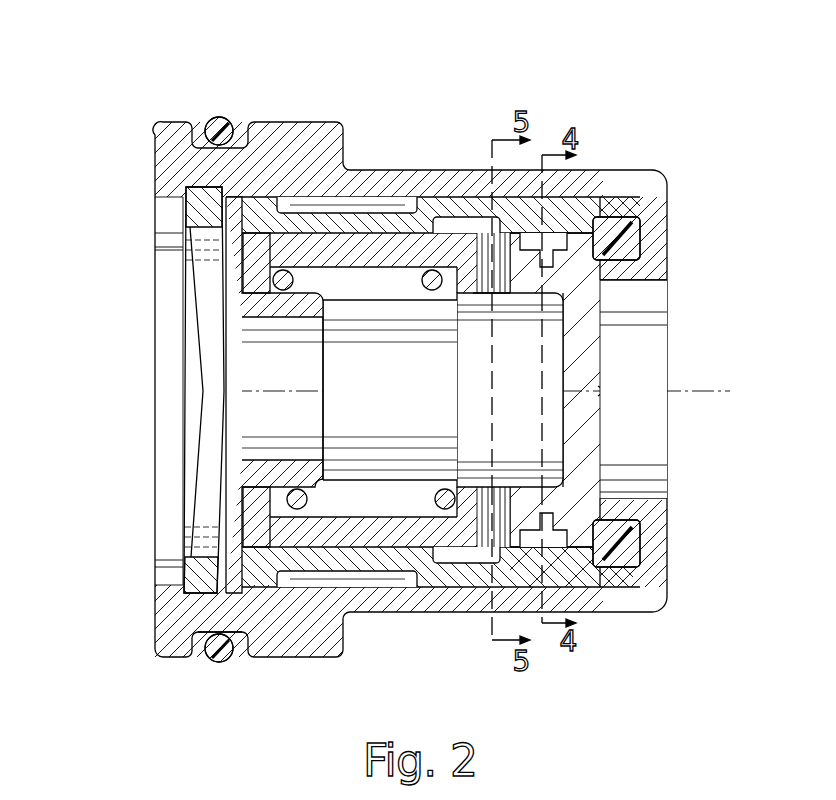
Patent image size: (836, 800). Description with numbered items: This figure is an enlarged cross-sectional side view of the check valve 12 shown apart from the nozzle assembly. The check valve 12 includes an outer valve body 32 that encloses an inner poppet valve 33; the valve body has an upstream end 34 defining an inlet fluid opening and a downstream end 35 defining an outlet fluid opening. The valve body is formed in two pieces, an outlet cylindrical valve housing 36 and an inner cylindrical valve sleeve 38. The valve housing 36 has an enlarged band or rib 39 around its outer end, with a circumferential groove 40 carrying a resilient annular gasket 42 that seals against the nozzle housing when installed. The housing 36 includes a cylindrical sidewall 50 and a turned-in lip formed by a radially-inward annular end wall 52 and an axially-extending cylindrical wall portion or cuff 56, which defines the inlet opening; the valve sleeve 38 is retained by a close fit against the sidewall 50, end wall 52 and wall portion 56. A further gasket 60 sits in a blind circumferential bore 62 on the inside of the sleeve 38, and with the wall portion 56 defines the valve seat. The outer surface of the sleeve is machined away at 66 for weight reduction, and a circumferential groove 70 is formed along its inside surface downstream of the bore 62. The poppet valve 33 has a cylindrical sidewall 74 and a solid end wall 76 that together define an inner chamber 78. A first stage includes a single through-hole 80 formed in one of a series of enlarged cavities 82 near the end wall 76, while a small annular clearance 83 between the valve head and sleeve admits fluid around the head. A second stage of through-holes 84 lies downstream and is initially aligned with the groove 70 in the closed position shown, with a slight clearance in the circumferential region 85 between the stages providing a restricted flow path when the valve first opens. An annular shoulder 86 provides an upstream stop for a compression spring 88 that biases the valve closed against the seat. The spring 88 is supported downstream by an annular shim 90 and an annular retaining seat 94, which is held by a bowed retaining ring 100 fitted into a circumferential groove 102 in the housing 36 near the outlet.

The check valve 12 is at (647, 63).
The outer valve body 32 is at (463, 604).
The poppet valve 33 is at (360, 537).
The upstream end 34 is at (667, 420).
The downstream end 35 is at (158, 480).
The valve housing 36 is at (600, 607).
The valve sleeve 38 is at (427, 570).
The band 39 is at (345, 220).
The groove 40 is at (245, 660).
The gasket 42 is at (207, 660).
The cylindrical sidewall 50 is at (614, 172).
The annular end wall 52 is at (660, 258).
The cylindrical wall portion 56 is at (625, 280).
The gasket 60 is at (630, 238).
The blind circumferential bore 62 is at (625, 575).
The machined-away outer surface 66 is at (303, 210).
The circumferential groove 70 is at (453, 223).
The cylindrical sidewall 74 is at (341, 228).
The end wall 76 is at (597, 353).
The inner chamber 78 is at (397, 375).
The through-hole 80 is at (540, 293).
The enlarged cavities 82 is at (480, 222).
The annular clearance 83 is at (555, 232).
The through-holes 84 is at (500, 292).
The circumferential region 85 is at (507, 240).
The annular shoulder 86 is at (467, 487).
The compression spring 88 is at (353, 497).
The annular shim 90 is at (255, 280).
The retaining seat 94 is at (252, 318).
The bowed retaining ring 100 is at (200, 237).
The circumferential groove 102 is at (202, 187).